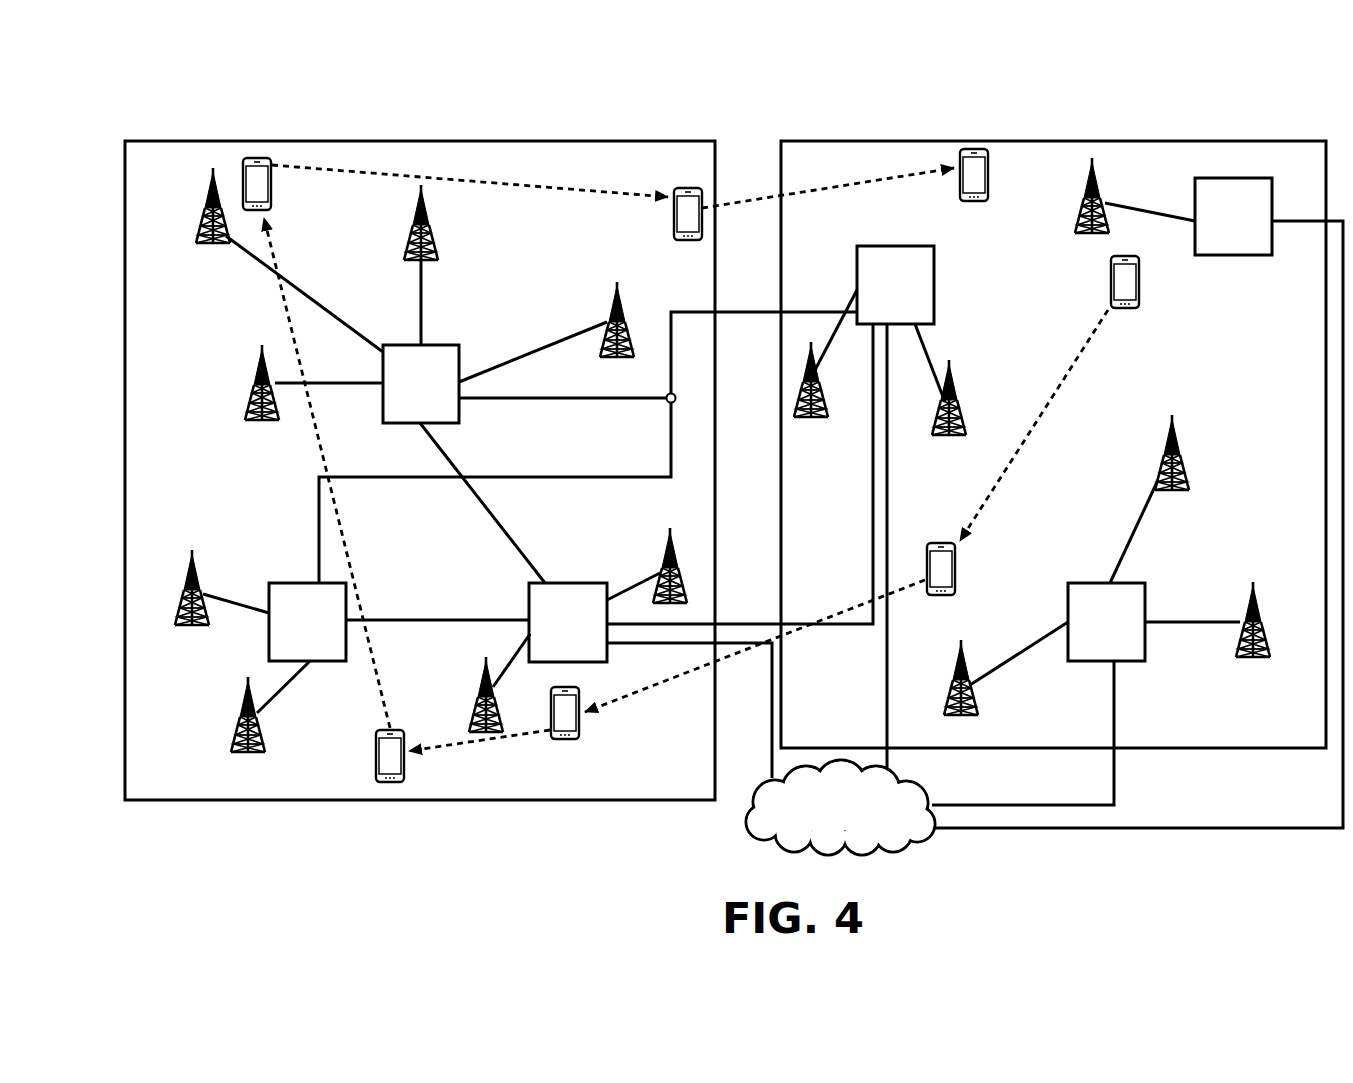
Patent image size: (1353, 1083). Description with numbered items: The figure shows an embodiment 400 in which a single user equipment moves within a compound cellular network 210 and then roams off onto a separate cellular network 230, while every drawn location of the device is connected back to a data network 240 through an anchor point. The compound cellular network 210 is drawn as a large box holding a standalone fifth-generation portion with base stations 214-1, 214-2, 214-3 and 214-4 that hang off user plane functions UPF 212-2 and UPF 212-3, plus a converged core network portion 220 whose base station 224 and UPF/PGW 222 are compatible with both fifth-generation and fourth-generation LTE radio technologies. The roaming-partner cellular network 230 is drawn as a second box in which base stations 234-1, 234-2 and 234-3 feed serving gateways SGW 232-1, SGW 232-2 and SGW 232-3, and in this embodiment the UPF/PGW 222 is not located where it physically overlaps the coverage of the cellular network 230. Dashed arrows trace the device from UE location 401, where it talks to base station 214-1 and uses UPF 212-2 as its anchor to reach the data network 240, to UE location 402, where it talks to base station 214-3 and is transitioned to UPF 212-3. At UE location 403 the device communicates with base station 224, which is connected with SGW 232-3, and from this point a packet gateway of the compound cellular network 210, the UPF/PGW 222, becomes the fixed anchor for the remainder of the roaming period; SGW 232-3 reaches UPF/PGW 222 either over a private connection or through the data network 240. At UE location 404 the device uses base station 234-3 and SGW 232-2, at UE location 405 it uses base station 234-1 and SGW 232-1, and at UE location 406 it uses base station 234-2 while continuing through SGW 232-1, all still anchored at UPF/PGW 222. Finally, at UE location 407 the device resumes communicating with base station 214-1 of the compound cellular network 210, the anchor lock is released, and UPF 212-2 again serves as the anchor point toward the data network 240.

The embodiment 400 is at (205, 68).
The compound cellular network 210 is at (1262, 141).
The converged core network portion 220 is at (703, 756).
The cellular network 230 is at (699, 176).
The data network 240 is at (828, 838).
The UPF/PGW 222 is at (921, 246).
The base station 224 is at (666, 565).
The serving gateway 232-1 is at (410, 345).
The serving gateway 232-2 is at (298, 583).
The serving gateway 232-3 is at (592, 583).
The base station 234-1 is at (210, 198).
The base station 234-2 is at (612, 318).
The base station 234-3 is at (246, 713).
The UPF 212-2 is at (1214, 255).
The UPF 212-3 is at (1080, 583).
The base station 214-1 is at (1085, 208).
The base station 214-2 is at (1165, 438).
The base station 214-3 is at (957, 660).
The base station 214-4 is at (948, 435).
The UE location 401 is at (1111, 285).
The UE location 402 is at (940, 543).
The UE location 403 is at (579, 735).
The UE location 404 is at (404, 775).
The UE location 405 is at (272, 200).
The UE location 406 is at (674, 218).
The UE location 407 is at (975, 149).